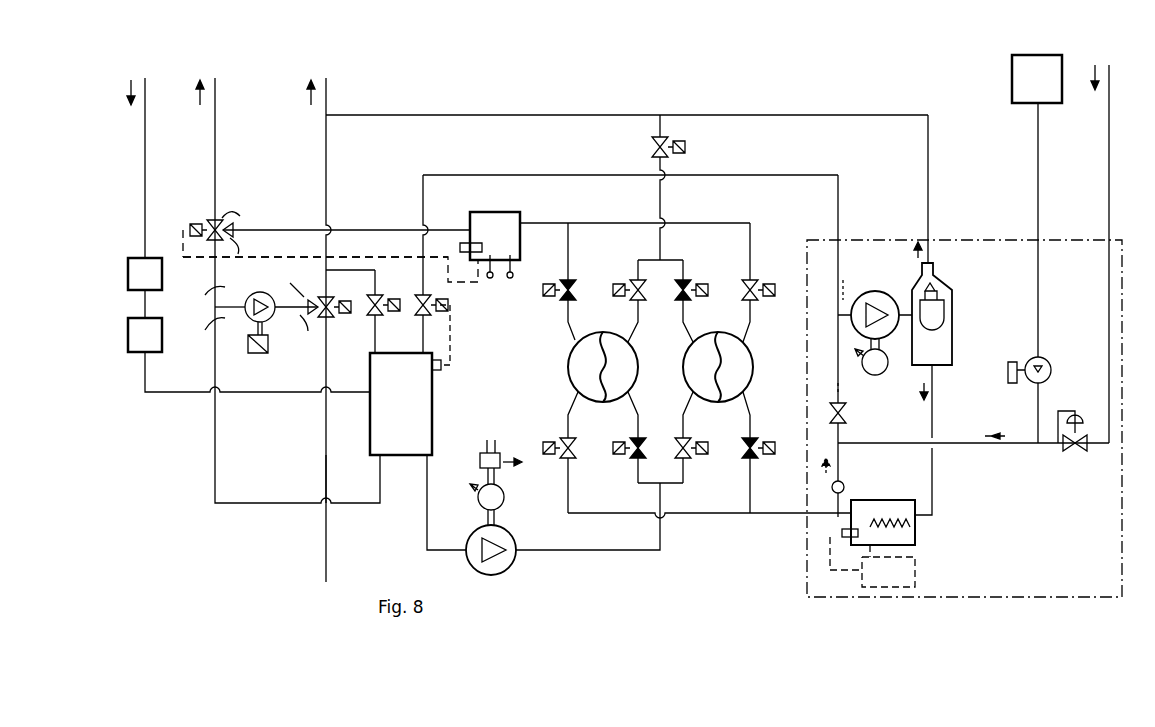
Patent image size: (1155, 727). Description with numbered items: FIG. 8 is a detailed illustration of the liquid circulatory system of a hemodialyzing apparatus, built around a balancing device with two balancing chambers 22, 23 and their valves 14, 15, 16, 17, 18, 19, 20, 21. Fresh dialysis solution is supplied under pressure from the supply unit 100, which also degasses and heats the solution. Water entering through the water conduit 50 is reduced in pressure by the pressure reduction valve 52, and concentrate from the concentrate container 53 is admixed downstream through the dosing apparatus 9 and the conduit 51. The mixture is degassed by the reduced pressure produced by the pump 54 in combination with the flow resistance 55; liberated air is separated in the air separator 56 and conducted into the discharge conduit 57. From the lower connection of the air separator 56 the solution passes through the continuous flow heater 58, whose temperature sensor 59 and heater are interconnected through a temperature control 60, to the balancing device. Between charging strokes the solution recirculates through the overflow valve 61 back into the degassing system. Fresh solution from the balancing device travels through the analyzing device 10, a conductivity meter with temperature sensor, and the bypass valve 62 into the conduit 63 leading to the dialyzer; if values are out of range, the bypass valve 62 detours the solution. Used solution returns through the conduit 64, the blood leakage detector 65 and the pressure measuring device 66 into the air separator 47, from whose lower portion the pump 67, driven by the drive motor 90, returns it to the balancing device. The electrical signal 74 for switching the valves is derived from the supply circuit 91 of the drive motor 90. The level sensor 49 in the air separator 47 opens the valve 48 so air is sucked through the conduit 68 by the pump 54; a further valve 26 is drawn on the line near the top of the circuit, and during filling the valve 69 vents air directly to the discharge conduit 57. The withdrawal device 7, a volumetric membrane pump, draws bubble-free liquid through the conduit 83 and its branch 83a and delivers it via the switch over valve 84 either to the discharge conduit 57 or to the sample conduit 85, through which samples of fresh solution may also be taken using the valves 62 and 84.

The withdrawal device 7 is at (270, 330).
The dosing apparatus 9 is at (1026, 360).
The analyzing device 10 is at (496, 221).
The valve 14 is at (760, 281).
The valve 15 is at (693, 281).
The valve 16 is at (625, 281).
The valve 17 is at (556, 281).
The valve 18 is at (760, 439).
The valve 19 is at (678, 457).
The valve 20 is at (625, 439).
The valve 21 is at (555, 439).
The balancing chamber 22 is at (690, 364).
The balancing chamber 23 is at (568, 367).
The valve 26 is at (654, 144).
The air separator 47 is at (432, 418).
The valve 48 is at (448, 302).
The level sensor 49 is at (426, 366).
The water conduit 50 is at (1109, 125).
The conduit 51 is at (1038, 168).
The pressure reduction valve 52 is at (1078, 450).
The concentrate container 53 is at (1020, 78).
The pump 54 is at (875, 291).
The flow resistance 55 is at (834, 411).
The air separator 56 is at (940, 363).
The discharge conduit 57 is at (329, 101).
The continuous flow heater 58 is at (915, 520).
The temperature sensor 59 is at (842, 533).
The temperature control 60 is at (860, 578).
The overflow valve 61 is at (830, 488).
The bypass valve 62 is at (201, 218).
The conduit 63 is at (218, 102).
The conduit 64 is at (148, 102).
The blood leakage detector 65 is at (128, 273).
The pressure measuring device 66 is at (128, 340).
The pump 67 is at (484, 535).
The conduit 68 is at (560, 175).
The valve 69 is at (386, 311).
The electrical signal 74 is at (515, 451).
The conduit 83 is at (268, 257).
The branch line 83a is at (214, 280).
The switch over valve 84 is at (314, 293).
The sample conduit 85 is at (326, 460).
The drive motor 90 is at (504, 500).
The supply circuit 91 is at (478, 458).
The supply unit 100 is at (924, 600).